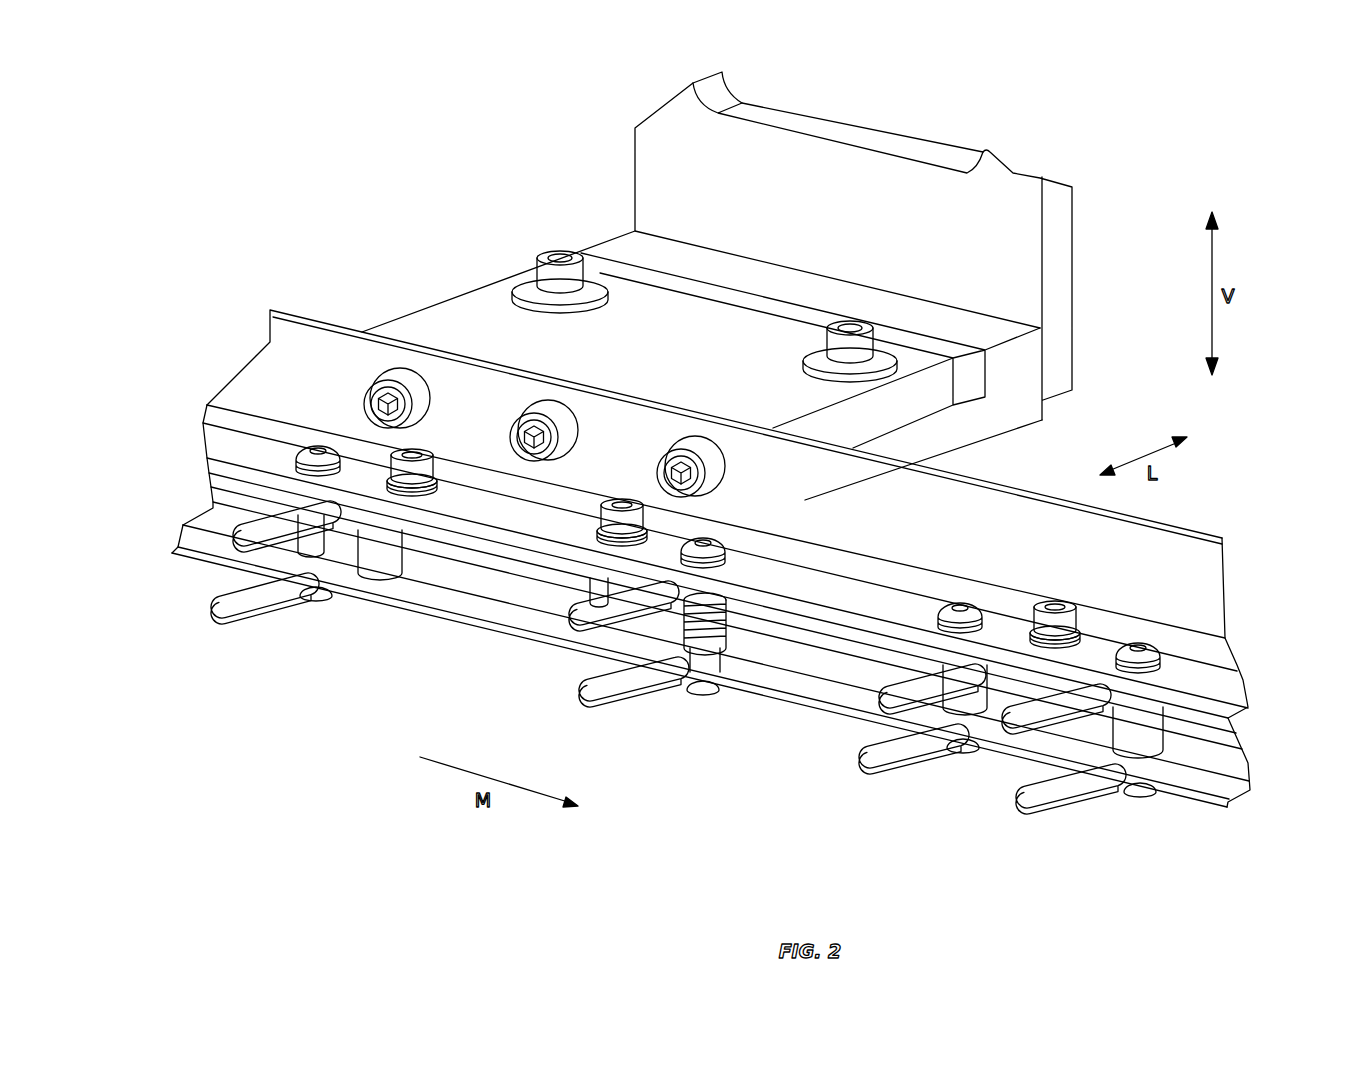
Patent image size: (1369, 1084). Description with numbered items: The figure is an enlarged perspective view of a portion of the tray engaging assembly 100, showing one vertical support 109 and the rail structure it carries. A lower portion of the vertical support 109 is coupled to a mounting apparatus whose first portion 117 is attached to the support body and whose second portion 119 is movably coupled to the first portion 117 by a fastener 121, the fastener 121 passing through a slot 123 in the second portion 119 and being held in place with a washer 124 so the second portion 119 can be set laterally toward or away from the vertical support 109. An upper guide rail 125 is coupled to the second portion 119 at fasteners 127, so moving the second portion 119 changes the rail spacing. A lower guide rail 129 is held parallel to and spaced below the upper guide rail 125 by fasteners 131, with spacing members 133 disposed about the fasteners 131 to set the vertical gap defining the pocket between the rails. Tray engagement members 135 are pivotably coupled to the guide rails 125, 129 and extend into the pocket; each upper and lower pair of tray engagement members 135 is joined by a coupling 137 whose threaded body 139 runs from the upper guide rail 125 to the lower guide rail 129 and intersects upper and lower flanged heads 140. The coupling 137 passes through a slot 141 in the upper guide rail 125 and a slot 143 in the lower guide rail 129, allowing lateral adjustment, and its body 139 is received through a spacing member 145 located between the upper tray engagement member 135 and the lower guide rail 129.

The tray engaging assembly 100 is at (266, 63).
The vertical support 109 is at (1082, 285).
The first portion 117 is at (1017, 428).
The second portion 119 is at (425, 328).
The fastener 121 is at (552, 277).
The slot 123 is at (805, 378).
The washer 124 is at (528, 288).
The upper guide rail 125 is at (1238, 577).
The fastener 127 is at (408, 390).
The lower guide rail 129 is at (1198, 814).
The fastener 131 is at (387, 462).
The spacing member 133 is at (398, 557).
The tray engagement member 135 is at (244, 537).
The coupling 137 is at (298, 620).
The threaded body 139 is at (735, 640).
The flanged head 140 is at (298, 452).
The slot 141 is at (733, 588).
The slot 143 is at (683, 655).
The spacing member 145 is at (310, 540).